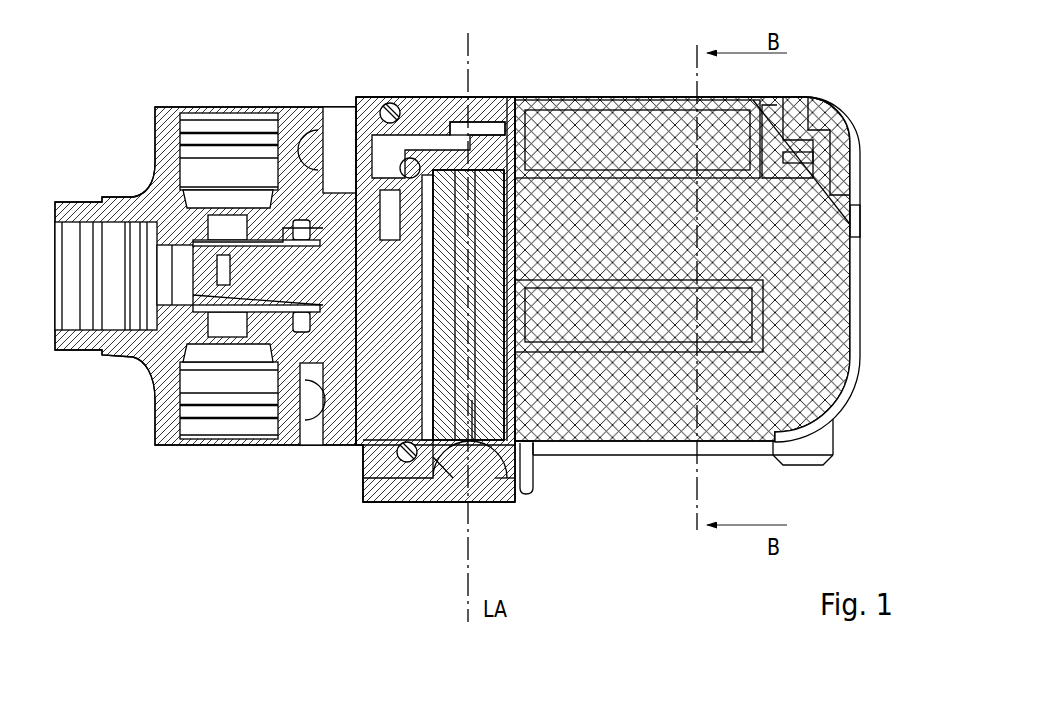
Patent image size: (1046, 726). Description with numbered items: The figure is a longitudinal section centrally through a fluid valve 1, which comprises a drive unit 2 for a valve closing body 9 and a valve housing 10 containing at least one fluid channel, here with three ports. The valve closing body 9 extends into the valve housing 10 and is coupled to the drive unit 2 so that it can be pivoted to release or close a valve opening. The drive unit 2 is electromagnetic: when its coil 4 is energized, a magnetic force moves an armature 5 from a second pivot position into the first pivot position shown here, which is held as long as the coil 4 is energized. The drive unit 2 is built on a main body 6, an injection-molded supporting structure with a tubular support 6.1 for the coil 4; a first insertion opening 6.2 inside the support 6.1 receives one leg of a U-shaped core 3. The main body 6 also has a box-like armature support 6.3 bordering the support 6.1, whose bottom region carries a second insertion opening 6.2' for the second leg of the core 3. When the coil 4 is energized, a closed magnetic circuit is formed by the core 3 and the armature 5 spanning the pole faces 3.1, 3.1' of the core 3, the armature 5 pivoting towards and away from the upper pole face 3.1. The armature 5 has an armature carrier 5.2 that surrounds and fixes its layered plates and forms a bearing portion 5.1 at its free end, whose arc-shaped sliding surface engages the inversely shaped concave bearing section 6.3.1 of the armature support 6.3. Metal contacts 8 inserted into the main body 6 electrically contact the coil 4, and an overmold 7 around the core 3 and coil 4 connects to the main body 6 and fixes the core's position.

The fluid valve 1 is at (145, 68).
The drive unit 2 is at (853, 100).
The U-shaped core 3 is at (833, 310).
The pole face 3.1 is at (456, 243).
The pole face 3.1' is at (355, 464).
The coil 4 is at (622, 122).
The armature 5 is at (420, 138).
The bearing portion 5.1 is at (495, 478).
The armature carrier 5.2 is at (407, 500).
The main body 6 is at (780, 124).
The support 6.1 is at (530, 483).
The first insertion opening 6.2 is at (852, 153).
The second insertion opening 6.2' is at (587, 464).
The armature support 6.3 is at (461, 490).
The concave bearing section 6.3.1 is at (499, 482).
The overmold 7 is at (740, 455).
The metal contacts 8 is at (820, 466).
The valve closing body 9 is at (268, 357).
The valve housing 10 is at (157, 403).